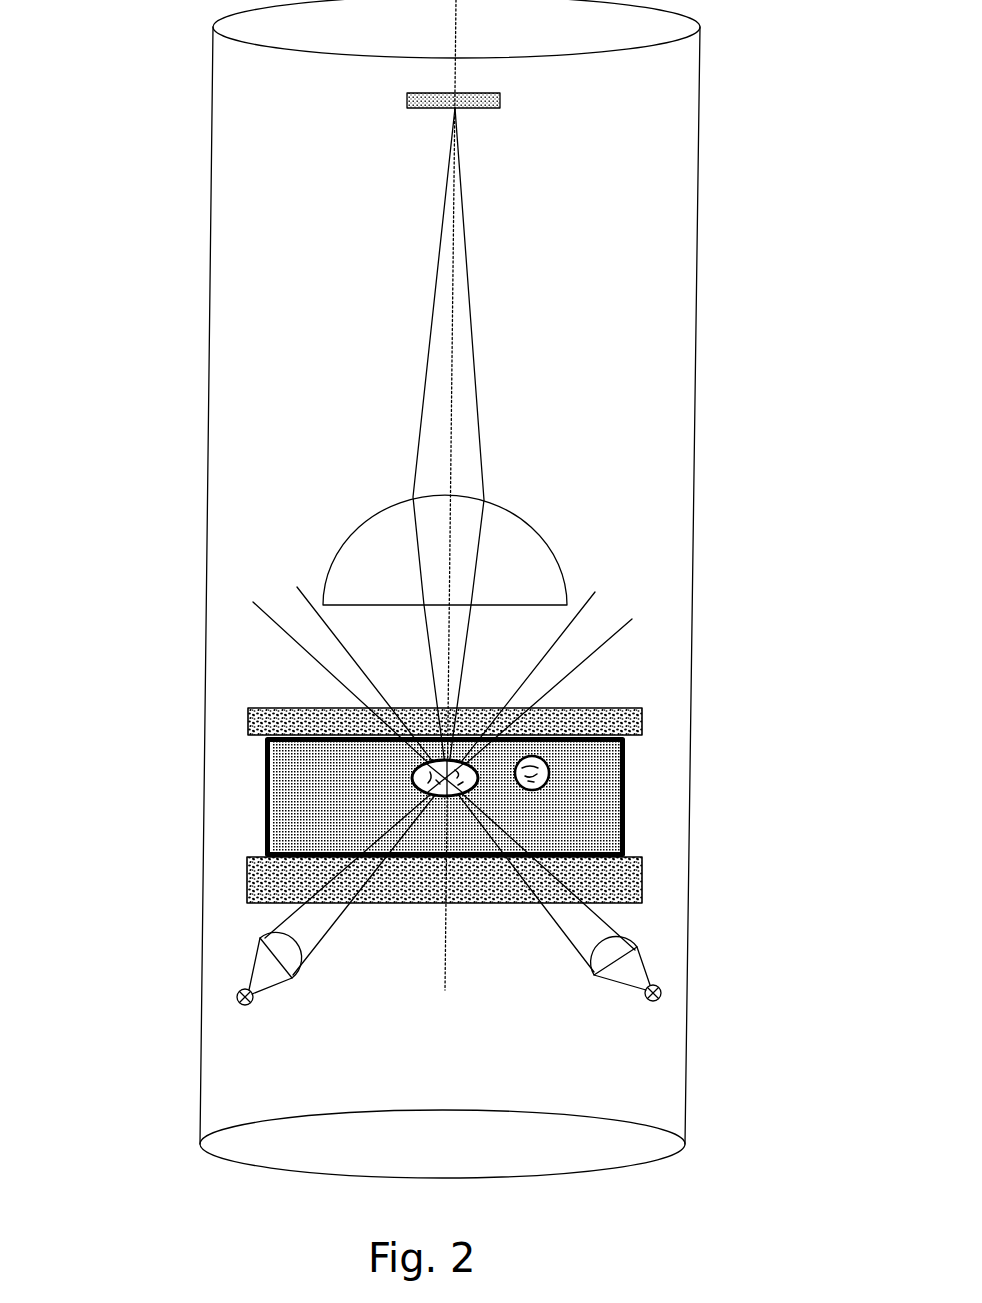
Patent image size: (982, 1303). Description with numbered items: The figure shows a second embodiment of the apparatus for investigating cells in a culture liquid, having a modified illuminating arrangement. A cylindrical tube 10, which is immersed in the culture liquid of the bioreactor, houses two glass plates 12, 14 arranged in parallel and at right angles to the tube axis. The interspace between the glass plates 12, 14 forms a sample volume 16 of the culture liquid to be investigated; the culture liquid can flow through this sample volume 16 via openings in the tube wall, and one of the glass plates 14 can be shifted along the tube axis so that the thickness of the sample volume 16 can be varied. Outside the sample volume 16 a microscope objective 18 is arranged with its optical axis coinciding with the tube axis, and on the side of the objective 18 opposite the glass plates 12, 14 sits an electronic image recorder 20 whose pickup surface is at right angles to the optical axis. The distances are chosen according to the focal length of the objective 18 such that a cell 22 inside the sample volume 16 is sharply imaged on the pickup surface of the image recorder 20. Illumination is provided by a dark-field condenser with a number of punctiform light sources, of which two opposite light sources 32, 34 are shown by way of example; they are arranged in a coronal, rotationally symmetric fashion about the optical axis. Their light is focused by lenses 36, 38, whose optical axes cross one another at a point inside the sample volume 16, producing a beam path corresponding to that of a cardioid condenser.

The cylindrical tube 10 is at (694, 438).
The glass plate 12 is at (630, 728).
The glass plate 14 is at (640, 883).
The sample volume 16 is at (587, 827).
The microscope objective 18 is at (533, 570).
The image recorder 20 is at (500, 100).
The cell 22 is at (547, 768).
The punctiform light source 32 is at (236, 997).
The punctiform light source 34 is at (662, 997).
The lens 36 is at (262, 941).
The lens 38 is at (637, 947).